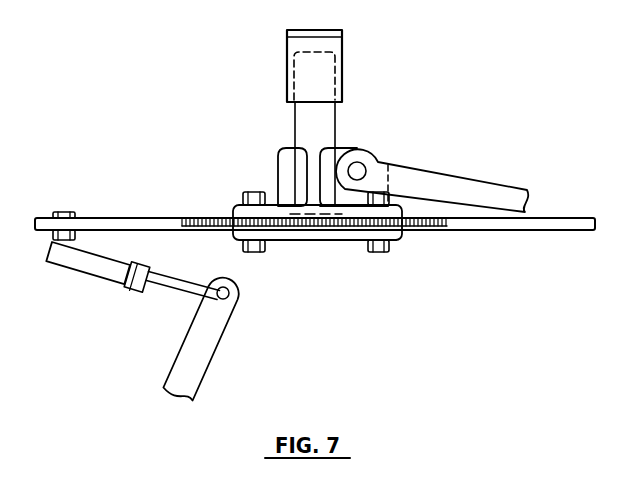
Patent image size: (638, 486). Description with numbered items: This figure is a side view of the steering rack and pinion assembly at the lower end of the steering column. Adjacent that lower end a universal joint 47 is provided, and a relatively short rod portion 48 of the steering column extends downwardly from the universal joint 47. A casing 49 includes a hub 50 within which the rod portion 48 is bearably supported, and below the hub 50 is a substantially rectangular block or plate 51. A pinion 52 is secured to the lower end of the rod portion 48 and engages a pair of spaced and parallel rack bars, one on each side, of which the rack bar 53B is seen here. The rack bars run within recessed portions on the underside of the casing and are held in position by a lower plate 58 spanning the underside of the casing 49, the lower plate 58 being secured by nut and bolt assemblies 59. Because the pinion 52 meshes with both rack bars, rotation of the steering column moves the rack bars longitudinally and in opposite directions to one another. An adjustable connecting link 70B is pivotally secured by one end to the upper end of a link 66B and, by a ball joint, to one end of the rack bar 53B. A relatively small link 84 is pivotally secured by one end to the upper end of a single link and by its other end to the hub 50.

The universal joint 47 is at (288, 38).
The rod portion 48 is at (295, 127).
The casing 49 is at (352, 143).
The hub 50 is at (278, 160).
The block or plate 51 is at (236, 210).
The pinion 52 is at (317, 219).
The rack bar 53B is at (478, 232).
The lower plate 58 is at (361, 238).
The nut and bolt assemblies 59 is at (389, 252).
The link 84 is at (446, 172).
The adjustable connecting link 70B is at (83, 277).
The link 66B is at (183, 343).